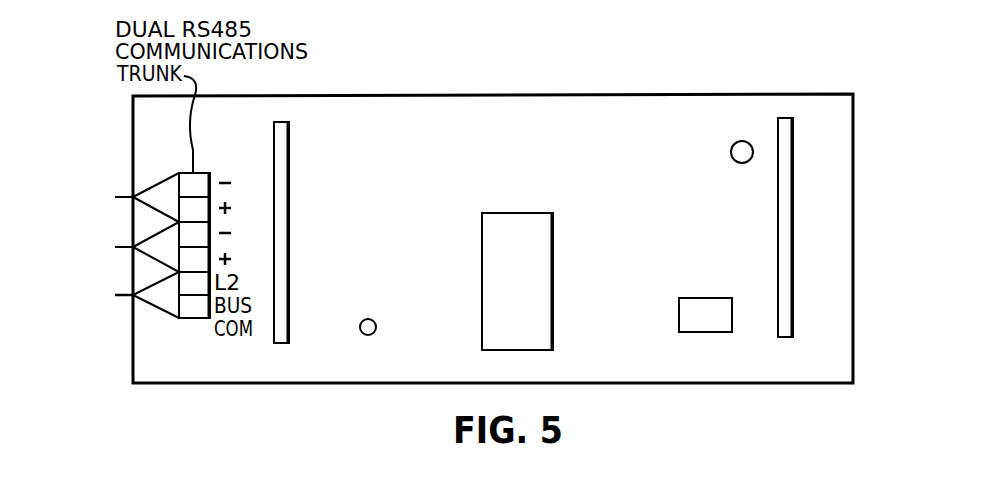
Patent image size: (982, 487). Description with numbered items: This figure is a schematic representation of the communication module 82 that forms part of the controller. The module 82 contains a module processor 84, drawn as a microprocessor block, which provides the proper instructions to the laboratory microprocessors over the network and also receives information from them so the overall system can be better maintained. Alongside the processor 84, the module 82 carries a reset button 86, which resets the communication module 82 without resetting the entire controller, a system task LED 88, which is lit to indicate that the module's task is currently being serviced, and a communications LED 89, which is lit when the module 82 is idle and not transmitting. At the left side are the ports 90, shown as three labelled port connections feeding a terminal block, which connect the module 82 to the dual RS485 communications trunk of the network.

The module 82 is at (803, 94).
The module processor 84 is at (553, 300).
The reset button 86 is at (700, 332).
The system task LED 88 is at (746, 163).
The communications LED 89 is at (375, 322).
The ports 90 is at (119, 303).